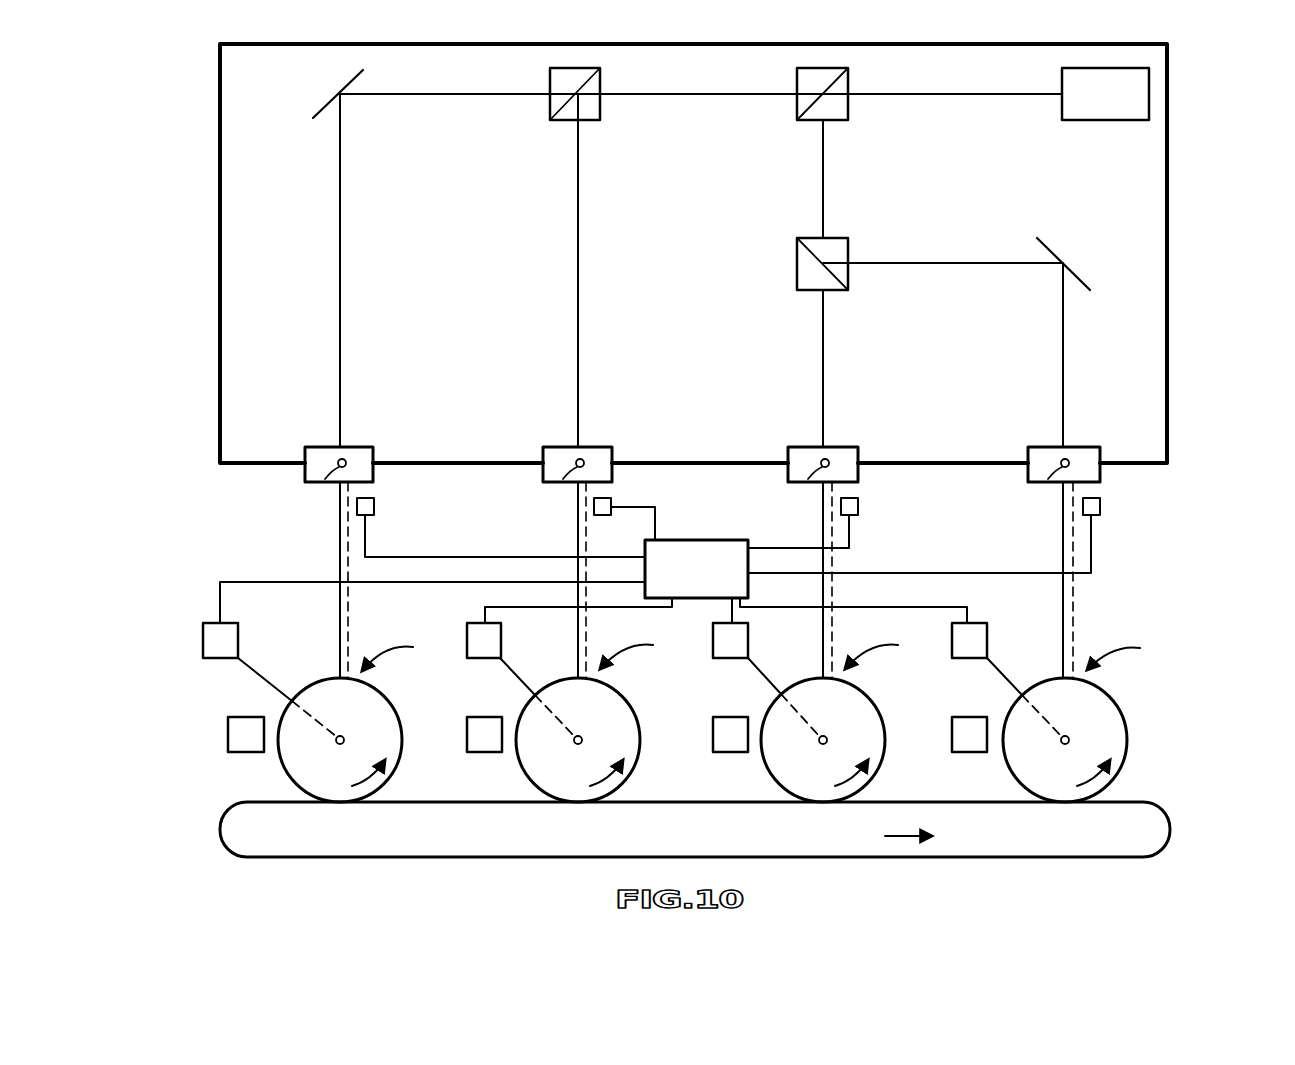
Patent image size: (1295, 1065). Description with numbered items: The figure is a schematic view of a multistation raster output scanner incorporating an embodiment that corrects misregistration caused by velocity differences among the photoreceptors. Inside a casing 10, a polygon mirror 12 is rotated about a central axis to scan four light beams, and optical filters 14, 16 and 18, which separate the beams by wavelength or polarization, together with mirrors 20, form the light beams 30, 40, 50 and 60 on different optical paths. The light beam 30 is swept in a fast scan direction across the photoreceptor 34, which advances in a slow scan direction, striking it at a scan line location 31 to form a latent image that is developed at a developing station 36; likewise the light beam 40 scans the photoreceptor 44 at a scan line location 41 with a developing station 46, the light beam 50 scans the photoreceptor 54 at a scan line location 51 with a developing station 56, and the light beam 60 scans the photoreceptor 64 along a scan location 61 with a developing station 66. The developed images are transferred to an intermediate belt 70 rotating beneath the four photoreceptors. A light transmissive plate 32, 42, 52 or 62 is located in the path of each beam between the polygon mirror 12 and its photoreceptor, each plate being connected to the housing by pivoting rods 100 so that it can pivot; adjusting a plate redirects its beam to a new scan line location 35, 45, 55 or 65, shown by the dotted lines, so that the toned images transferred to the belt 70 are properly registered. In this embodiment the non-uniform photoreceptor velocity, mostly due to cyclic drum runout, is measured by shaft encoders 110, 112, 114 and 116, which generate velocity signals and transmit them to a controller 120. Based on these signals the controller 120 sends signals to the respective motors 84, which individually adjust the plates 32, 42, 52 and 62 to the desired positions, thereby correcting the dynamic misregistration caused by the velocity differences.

The casing 10 is at (1168, 330).
The polygon mirror 12 is at (1118, 121).
The optical filter 14 is at (849, 81).
The optical filter 16 is at (797, 262).
The optical filter 18 is at (553, 121).
The mirror 20 is at (357, 72).
The light beam 30 is at (340, 338).
The light beam 40 is at (578, 338).
The light beam 50 is at (823, 352).
The light beam 60 is at (1063, 372).
The light transmissive plate 32 is at (372, 484).
The light transmissive plate 42 is at (610, 484).
The light transmissive plate 52 is at (856, 484).
The light transmissive plate 62 is at (1098, 484).
The pivoting rod 100 is at (330, 483).
The motor 84 is at (375, 507).
The shaft encoder 114 is at (696, 569).
The shaft encoder 110 is at (203, 635).
The shaft encoder 112 is at (468, 622).
The controller 120 is at (749, 590).
The shaft encoder 116 is at (983, 622).
The scan line location 31 is at (337, 672).
The scan line location 41 is at (575, 672).
The scan line location 51 is at (820, 672).
The scan location 61 is at (1060, 672).
The photoreceptor 34 is at (398, 765).
The photoreceptor 44 is at (636, 765).
The photoreceptor 54 is at (881, 765).
The photoreceptor 64 is at (1123, 765).
The new scan line location 35 is at (405, 652).
The new scan line location 45 is at (644, 650).
The new scan line location 55 is at (889, 650).
The new scan location 65 is at (1132, 653).
The developing station 36 is at (228, 727).
The developing station 46 is at (485, 714).
The developing station 56 is at (728, 715).
The developing station 66 is at (967, 715).
The intermediate belt 70 is at (985, 858).